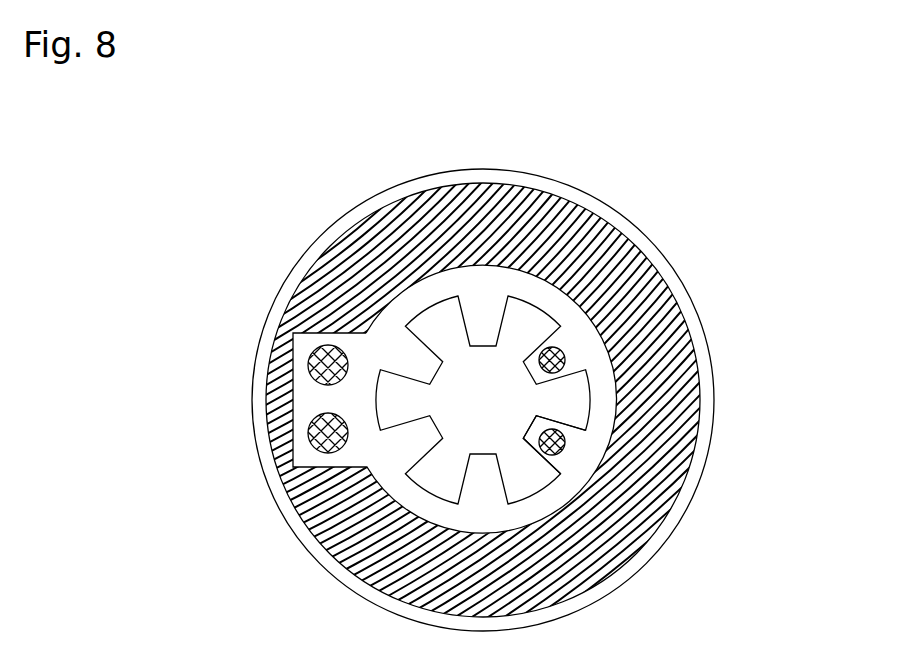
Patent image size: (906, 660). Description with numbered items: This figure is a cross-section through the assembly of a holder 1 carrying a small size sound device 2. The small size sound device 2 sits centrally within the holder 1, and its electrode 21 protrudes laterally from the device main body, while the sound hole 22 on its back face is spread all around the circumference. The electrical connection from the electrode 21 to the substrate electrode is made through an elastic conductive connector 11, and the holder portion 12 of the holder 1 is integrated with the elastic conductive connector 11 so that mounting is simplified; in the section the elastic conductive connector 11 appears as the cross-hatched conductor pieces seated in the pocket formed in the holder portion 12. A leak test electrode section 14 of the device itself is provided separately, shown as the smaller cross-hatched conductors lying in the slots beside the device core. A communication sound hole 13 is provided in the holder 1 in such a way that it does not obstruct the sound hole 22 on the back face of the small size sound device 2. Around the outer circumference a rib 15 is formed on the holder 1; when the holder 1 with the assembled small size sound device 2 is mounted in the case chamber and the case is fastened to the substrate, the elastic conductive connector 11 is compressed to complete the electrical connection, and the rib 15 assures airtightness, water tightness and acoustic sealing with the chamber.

The holder 1 is at (505, 400).
The small size sound device 2 is at (499, 330).
The elastic conductive connector 11 is at (314, 447).
The holder portion 12 is at (660, 380).
The communication sound hole 13 is at (483, 400).
The leak test electrode section 14 is at (558, 346).
The rib 15 is at (704, 458).
The electrode 21 is at (278, 424).
The sound hole 22 is at (528, 472).